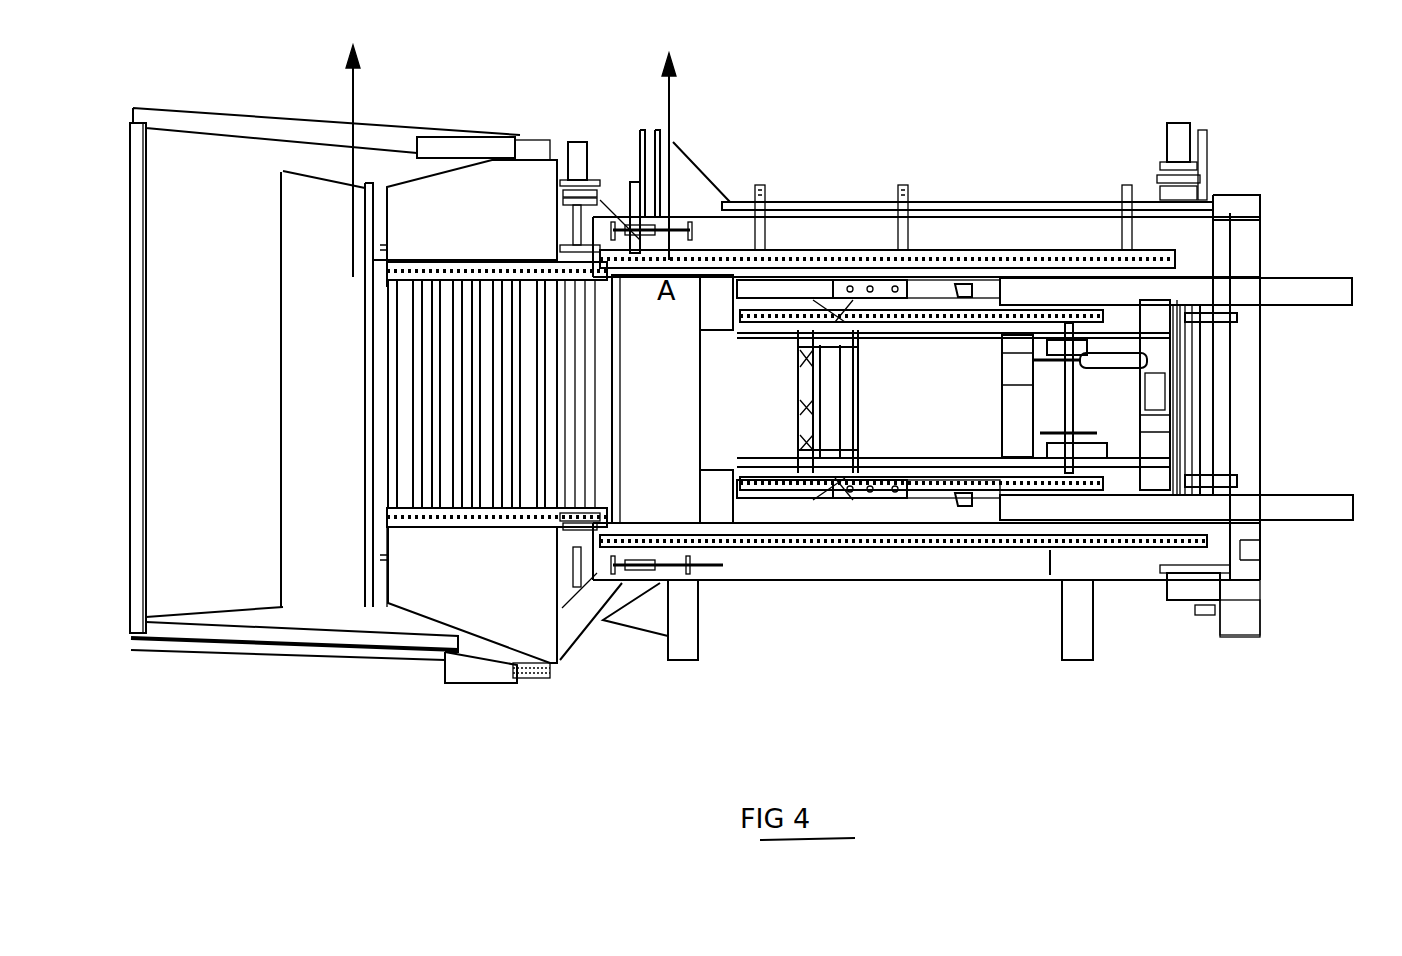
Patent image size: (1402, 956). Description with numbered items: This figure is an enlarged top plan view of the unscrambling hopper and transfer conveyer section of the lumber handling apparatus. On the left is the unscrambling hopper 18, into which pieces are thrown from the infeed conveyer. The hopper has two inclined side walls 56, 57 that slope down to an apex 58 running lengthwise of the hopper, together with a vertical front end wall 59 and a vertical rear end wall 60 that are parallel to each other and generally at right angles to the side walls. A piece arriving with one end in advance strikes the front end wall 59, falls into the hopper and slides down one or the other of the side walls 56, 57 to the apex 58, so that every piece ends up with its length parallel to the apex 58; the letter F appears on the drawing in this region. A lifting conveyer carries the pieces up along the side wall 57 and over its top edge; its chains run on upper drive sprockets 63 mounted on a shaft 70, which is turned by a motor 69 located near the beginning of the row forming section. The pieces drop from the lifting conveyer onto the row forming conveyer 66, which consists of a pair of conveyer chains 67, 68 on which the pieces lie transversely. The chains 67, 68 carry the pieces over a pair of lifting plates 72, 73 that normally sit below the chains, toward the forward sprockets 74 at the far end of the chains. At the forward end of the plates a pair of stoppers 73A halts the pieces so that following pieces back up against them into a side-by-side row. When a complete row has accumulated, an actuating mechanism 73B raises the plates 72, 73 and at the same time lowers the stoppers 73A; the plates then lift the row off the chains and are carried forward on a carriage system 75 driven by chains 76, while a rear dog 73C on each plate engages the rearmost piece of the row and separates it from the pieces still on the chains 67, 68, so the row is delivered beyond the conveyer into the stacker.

The side wall 56 is at (207, 187).
The rear end wall 60 is at (300, 143).
The side wall 57 is at (438, 202).
The apex 58 is at (363, 577).
The unscrambling hopper 18 is at (248, 578).
The feed direction F is at (288, 613).
The front end wall 59 is at (315, 622).
The upper drive sprocket 63 is at (604, 275).
The shaft 70 is at (600, 378).
The motor 69 is at (588, 157).
The row forming conveyer 66 is at (829, 228).
The conveyer chain 67 is at (947, 250).
The sprockets 74 is at (1167, 148).
The lifting plate 73 is at (1302, 293).
The lifting plate 72 is at (1307, 500).
The stoppers 73A is at (1237, 318).
The actuating mechanism 73B is at (1220, 402).
The rear dog 73C is at (970, 288).
The chains 76 is at (926, 322).
The carriage system 75 is at (1033, 357).
The conveyer chain 68 is at (942, 550).